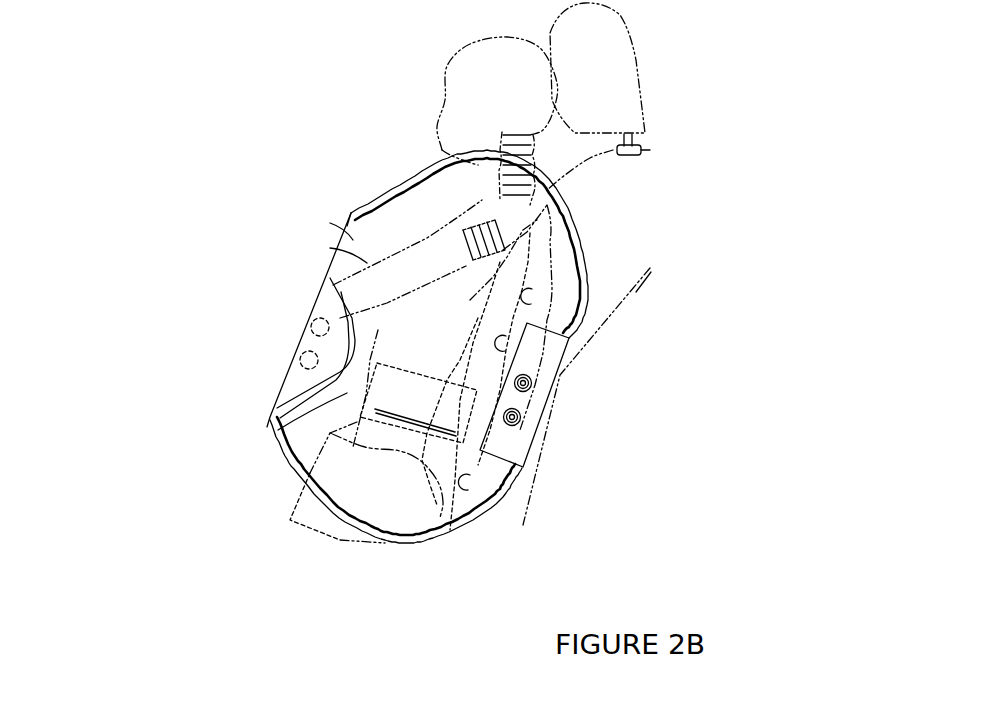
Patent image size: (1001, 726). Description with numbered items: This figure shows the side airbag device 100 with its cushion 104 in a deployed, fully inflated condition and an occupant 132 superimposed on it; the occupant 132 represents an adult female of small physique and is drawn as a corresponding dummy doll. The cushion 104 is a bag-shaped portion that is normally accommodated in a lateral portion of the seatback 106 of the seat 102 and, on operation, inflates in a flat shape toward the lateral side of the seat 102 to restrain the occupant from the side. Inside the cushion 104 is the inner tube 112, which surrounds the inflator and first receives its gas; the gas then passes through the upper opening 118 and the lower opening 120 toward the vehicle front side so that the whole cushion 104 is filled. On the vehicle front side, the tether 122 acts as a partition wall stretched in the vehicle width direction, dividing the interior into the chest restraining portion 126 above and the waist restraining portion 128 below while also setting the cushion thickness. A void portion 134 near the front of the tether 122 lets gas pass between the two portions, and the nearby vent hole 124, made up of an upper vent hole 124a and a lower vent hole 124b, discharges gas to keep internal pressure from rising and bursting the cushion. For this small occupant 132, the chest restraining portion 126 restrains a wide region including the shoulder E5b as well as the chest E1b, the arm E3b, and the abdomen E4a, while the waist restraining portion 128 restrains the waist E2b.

The side airbag device 100 is at (305, 129).
The seat 102 is at (636, 66).
The cushion 104 is at (430, 158).
The seatback 106 is at (637, 283).
The inner tube 112 is at (505, 346).
The upper opening 118 is at (533, 293).
The lower opening 120 is at (470, 480).
The tether 122 is at (418, 373).
The vent hole 124 is at (238, 345).
The vent hole 124a is at (310, 327).
The vent hole 124b is at (300, 360).
The chest restraining portion 126 is at (355, 238).
The waist restraining portion 128 is at (343, 498).
The occupant 132 is at (457, 66).
The void portion 134 is at (278, 430).
The chest E1b is at (412, 317).
The waist E2b is at (387, 503).
The arm E3b is at (367, 263).
The abdomen E4a is at (330, 380).
The shoulder E5b is at (543, 180).